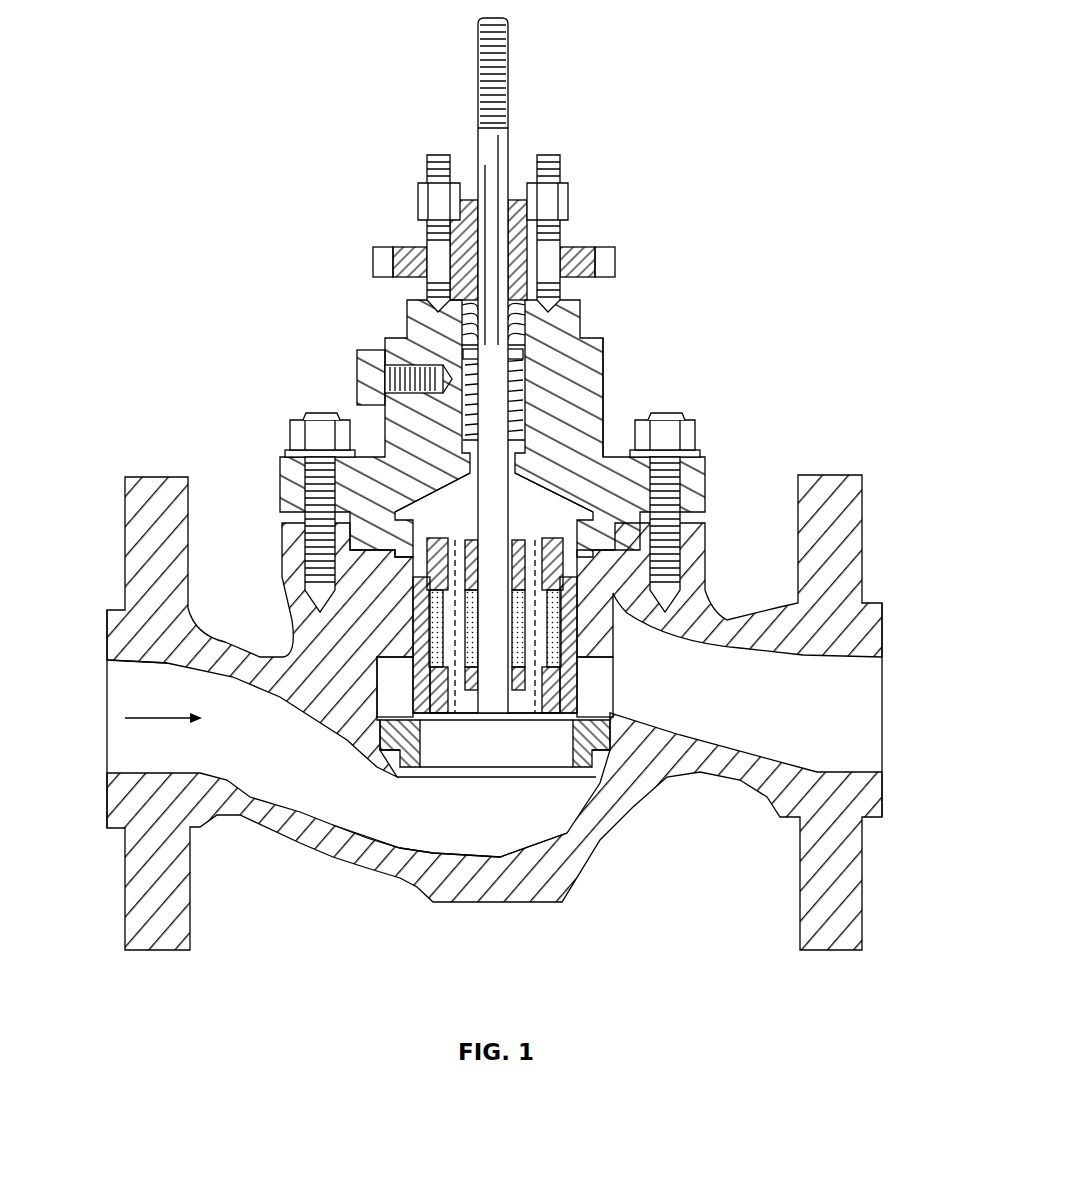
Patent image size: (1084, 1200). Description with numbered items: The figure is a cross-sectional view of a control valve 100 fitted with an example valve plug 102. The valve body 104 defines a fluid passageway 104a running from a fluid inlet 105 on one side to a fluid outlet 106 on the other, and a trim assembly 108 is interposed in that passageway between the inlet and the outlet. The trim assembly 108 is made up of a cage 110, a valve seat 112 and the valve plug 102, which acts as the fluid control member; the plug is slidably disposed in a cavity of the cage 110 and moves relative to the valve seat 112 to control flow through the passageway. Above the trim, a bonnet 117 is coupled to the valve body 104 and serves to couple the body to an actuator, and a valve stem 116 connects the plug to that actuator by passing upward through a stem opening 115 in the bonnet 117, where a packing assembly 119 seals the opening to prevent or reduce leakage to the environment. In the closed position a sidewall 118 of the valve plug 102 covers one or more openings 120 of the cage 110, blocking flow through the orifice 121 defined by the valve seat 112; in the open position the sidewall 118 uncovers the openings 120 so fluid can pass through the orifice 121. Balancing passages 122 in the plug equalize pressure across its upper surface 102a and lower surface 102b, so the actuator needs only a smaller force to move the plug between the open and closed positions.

The control valve 100 is at (688, 56).
The valve plug 102 is at (430, 513).
The upper surface of the valve plug 102a is at (606, 440).
The lower surface of the valve plug 102b is at (567, 717).
The valve body 104 is at (885, 630).
The fluid passageway 104a is at (278, 760).
The fluid inlet 105 is at (107, 695).
The fluid outlet 106 is at (885, 716).
The trim assembly 108 is at (355, 648).
The cage 110 is at (613, 657).
The valve seat 112 is at (610, 722).
The stem opening 115 is at (603, 350).
The valve stem 116 is at (600, 408).
The bonnet 117 is at (586, 336).
The sidewall of the valve plug 118 is at (577, 688).
The packing assembly 119 is at (452, 331).
The openings of the cage 120 is at (363, 743).
The orifice 121 is at (537, 748).
The balancing passages 122 is at (450, 690).